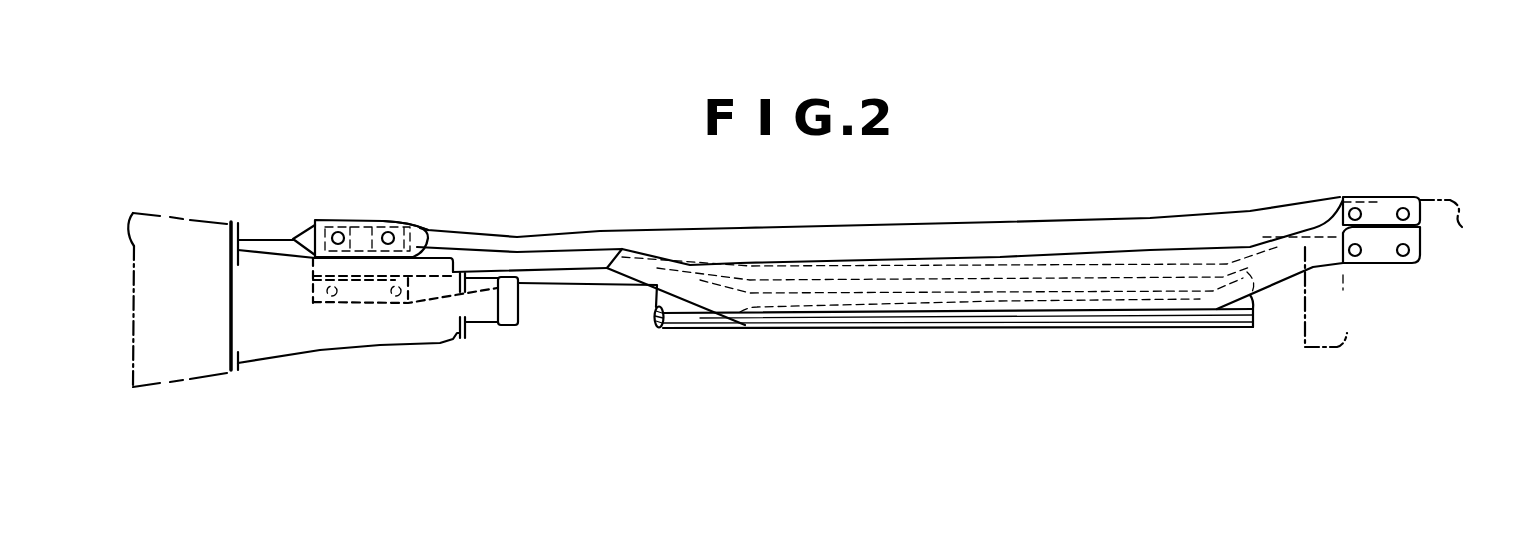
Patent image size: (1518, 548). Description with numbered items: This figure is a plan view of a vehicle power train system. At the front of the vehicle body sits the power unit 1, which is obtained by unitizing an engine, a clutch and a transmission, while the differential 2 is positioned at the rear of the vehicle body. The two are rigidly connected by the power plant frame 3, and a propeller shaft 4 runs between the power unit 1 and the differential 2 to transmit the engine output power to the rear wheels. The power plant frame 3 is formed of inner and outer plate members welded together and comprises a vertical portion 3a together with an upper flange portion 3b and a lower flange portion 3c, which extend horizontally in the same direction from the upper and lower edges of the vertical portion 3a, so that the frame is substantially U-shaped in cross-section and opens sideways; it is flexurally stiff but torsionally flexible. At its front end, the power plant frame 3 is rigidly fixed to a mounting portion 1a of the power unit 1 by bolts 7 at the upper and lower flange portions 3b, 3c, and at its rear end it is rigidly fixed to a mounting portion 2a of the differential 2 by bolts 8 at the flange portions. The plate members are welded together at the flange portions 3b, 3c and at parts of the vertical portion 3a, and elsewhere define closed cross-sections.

The power unit 1 is at (290, 365).
The mounting portion of the power unit 1a is at (428, 229).
The bolts 7 is at (382, 227).
The differential 2 is at (1302, 338).
The mounting portion of the differential 2a is at (1383, 200).
The bolts 8 is at (1355, 208).
The power plant frame 3 is at (838, 224).
The vertical portion 3a is at (988, 242).
The upper flange portion 3b is at (1007, 309).
The lower flange portion 3c is at (593, 286).
The propeller shaft 4 is at (705, 320).